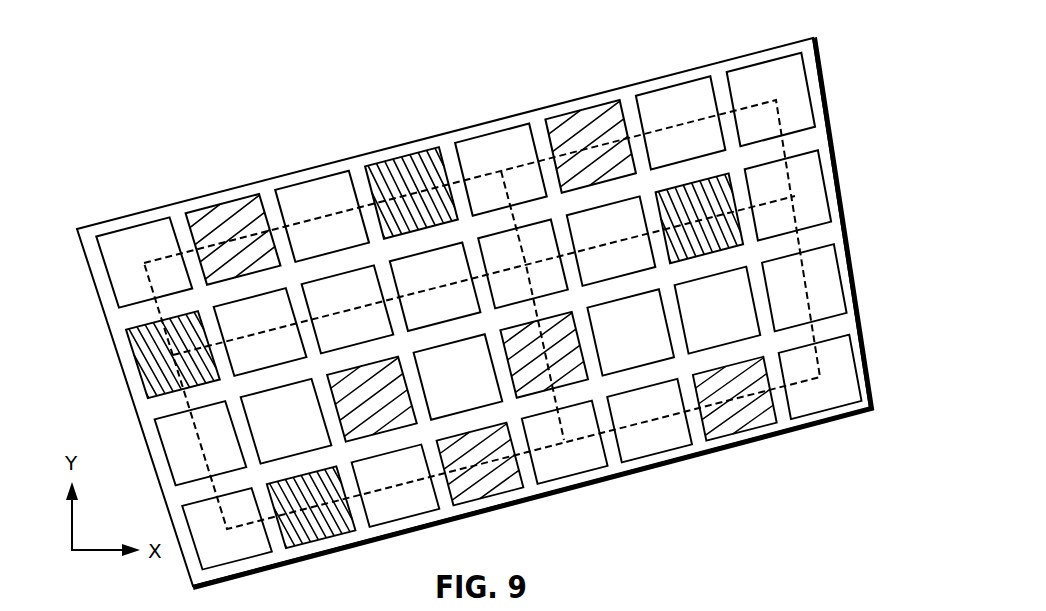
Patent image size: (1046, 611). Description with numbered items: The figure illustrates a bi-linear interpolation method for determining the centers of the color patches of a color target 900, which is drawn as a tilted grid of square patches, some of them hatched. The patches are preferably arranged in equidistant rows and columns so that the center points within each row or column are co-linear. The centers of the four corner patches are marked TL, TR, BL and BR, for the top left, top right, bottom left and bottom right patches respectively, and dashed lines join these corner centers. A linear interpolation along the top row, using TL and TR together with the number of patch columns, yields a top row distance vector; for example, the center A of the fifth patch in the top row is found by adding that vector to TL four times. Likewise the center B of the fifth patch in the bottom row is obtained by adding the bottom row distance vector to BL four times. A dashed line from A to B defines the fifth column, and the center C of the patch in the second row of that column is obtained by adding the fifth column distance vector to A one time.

The color target 900 is at (486, 313).
The top left corner patch center TL is at (144, 262).
The top right corner patch center TR is at (771, 100).
The bottom left corner patch center BL is at (227, 528).
The bottom right corner patch center BR is at (820, 377).
The center point of fifth patch in top row A is at (501, 170).
The center point of fifth patch in bottom row B is at (565, 442).
The center point of patch in second row of fifth column C is at (523, 263).